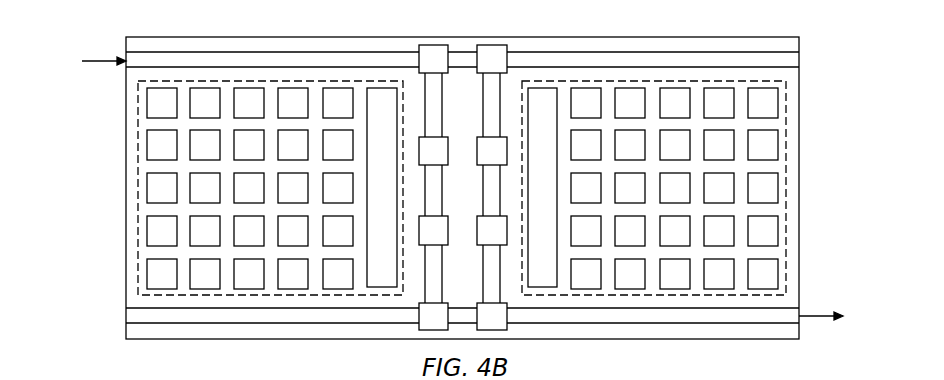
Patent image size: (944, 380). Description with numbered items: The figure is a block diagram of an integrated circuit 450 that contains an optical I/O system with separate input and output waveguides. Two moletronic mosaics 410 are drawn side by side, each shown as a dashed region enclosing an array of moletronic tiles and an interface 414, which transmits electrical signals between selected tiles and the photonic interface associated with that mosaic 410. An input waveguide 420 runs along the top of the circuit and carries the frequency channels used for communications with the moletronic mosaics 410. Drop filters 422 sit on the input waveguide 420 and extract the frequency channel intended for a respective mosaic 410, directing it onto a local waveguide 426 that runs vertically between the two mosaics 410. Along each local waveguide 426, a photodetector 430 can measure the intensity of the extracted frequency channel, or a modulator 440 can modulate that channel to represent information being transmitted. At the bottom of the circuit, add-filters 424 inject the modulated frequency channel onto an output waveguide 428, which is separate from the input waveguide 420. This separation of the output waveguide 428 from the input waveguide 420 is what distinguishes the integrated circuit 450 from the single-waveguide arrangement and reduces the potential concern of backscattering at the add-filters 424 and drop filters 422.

The moletronic mosaic 410 is at (138, 137).
The interface 414 is at (462, 187).
The input waveguide 420 is at (331, 52).
The drop filter 422 is at (433, 45).
The add-filter 424 is at (432, 330).
The local waveguide 426 is at (442, 108).
The output waveguide 428 is at (592, 323).
The photodetector 430 is at (447, 150).
The modulator 440 is at (447, 232).
The integrated circuit 450 is at (215, 37).